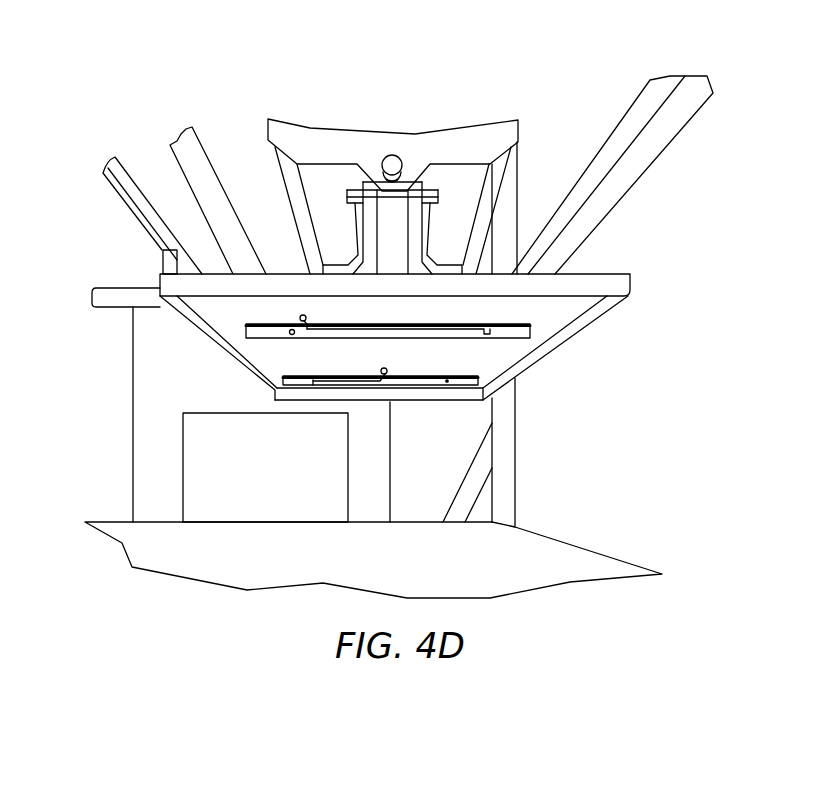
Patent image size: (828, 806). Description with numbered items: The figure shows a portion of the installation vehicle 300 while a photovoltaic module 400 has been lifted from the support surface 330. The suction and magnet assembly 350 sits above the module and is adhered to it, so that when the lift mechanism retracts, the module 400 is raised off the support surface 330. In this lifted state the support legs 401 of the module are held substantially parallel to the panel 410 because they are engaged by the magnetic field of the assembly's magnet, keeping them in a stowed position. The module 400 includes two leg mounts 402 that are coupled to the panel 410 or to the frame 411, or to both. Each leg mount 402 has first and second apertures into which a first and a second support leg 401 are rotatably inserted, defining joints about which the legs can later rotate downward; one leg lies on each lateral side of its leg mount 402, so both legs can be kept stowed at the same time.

The installation vehicle 300 is at (601, 78).
The suction and magnet assembly 350 is at (455, 137).
The photovoltaic module 400 is at (173, 288).
The frame 411 is at (208, 335).
The panel 410 is at (487, 367).
The support legs 401 is at (273, 332).
The leg mounts 402 is at (420, 328).
The support surface 330 is at (133, 533).